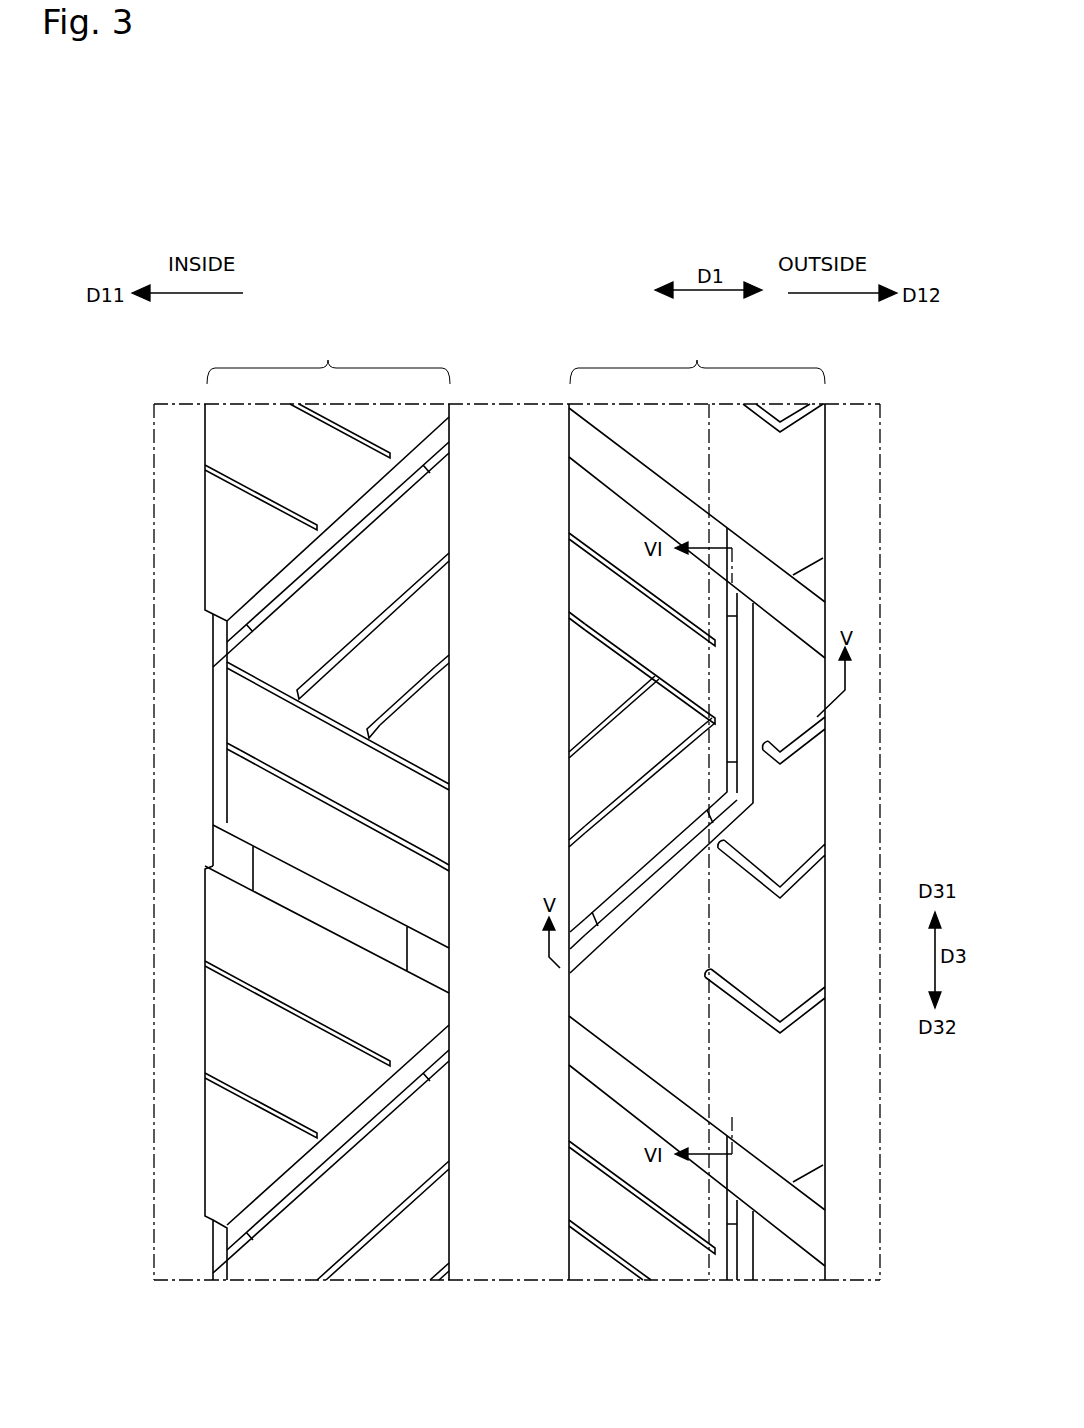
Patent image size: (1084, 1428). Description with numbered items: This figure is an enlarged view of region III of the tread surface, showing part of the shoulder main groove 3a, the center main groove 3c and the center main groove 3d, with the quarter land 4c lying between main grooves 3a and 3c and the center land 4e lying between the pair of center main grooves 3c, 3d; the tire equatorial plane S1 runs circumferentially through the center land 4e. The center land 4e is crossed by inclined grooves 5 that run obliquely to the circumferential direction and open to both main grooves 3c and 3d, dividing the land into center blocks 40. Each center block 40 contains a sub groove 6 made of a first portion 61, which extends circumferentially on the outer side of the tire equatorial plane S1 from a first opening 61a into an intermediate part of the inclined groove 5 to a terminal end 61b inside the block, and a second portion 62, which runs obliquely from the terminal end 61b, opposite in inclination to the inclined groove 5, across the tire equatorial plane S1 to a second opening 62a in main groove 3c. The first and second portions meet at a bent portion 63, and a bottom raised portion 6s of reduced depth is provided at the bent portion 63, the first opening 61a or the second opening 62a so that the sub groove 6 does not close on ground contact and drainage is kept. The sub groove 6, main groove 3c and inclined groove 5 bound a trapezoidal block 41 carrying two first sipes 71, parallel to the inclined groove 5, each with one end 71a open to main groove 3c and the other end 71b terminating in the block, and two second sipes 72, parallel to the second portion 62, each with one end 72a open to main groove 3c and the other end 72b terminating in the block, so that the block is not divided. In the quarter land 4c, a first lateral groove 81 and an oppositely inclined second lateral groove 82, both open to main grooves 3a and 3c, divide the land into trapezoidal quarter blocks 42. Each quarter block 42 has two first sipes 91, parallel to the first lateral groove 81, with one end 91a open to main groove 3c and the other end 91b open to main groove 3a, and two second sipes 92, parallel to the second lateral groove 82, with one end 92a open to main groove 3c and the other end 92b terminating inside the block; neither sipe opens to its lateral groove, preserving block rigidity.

The shoulder main groove 3a is at (178, 418).
The center main groove 3c is at (513, 418).
The center main groove 3d is at (848, 418).
The quarter land 4c is at (327, 806).
The center land 4e is at (697, 808).
The inclined groove 5 is at (597, 460).
The sub groove 6 is at (740, 820).
The bottom raised portion 6s is at (726, 603).
The center block 40 is at (828, 735).
The trapezoidal block 41 is at (569, 690).
The quarter block 42 is at (452, 1177).
The first portion 61 is at (756, 650).
The first opening 61a is at (738, 594).
The terminal end 61b is at (742, 791).
The second portion 62 is at (667, 887).
The second opening 62a is at (569, 963).
The bent portion 63 is at (725, 790).
The first sipe 71 is at (597, 568).
The one end of first sipe 71a is at (598, 630).
The other end of first sipe 71b is at (715, 712).
The second sipe 72 is at (597, 712).
The one end of second sipe 72a is at (595, 830).
The other end of second sipe 72b is at (710, 718).
The first lateral groove 81 is at (427, 962).
The second lateral groove 82 is at (436, 454).
The first sipe 91 is at (422, 760).
The one end of first sipe 91a is at (452, 853).
The other end of first sipe 91b is at (227, 748).
The second sipe 92 is at (418, 594).
The one end of second sipe 92a is at (449, 668).
The other end of second sipe 92b is at (371, 727).
The tire equatorial plane S1 is at (709, 429).
The region III is at (887, 428).